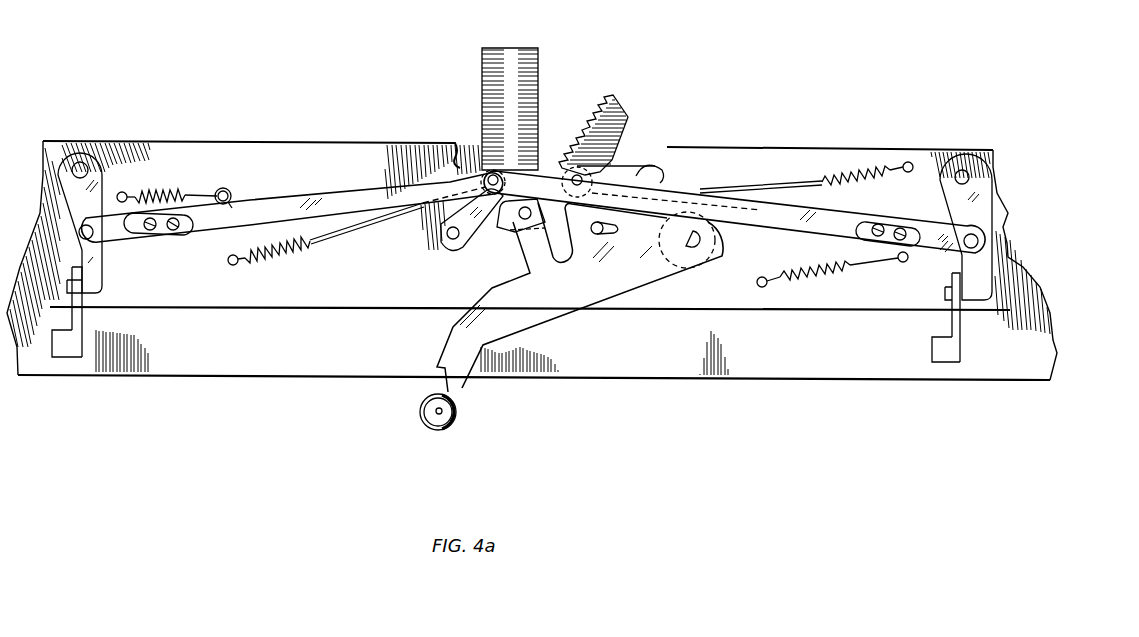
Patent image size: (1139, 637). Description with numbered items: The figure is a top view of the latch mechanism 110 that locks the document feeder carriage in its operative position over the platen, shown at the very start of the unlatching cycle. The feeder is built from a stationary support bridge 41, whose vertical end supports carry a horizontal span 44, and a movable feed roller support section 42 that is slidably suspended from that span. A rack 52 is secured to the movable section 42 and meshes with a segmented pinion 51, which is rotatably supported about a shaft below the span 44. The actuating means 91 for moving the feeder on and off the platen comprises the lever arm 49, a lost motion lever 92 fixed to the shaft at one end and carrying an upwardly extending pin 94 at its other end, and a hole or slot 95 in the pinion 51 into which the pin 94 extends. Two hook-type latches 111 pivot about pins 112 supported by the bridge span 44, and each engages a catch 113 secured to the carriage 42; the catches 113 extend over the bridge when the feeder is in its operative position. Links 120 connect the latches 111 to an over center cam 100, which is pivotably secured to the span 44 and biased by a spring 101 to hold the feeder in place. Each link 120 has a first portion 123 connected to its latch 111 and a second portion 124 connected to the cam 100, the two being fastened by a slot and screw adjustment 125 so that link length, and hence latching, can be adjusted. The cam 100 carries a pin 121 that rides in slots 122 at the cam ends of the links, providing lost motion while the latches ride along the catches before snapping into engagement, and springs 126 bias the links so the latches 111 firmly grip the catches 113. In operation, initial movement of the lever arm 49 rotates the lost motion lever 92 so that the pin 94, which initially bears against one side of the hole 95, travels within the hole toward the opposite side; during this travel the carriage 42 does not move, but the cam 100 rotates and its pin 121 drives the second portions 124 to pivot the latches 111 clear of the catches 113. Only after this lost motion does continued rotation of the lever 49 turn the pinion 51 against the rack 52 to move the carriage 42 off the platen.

The stationary support bridge 41 is at (1003, 222).
The movable feed roller support section 42 is at (1040, 368).
The horizontal span 44 is at (188, 140).
The lever arm 49 is at (458, 410).
The segmented pinion 51 is at (615, 103).
The rack 52 is at (525, 50).
The actuating means 91 is at (566, 338).
The lost motion lever 92 is at (662, 168).
The pin 94 is at (600, 172).
The hole or slot 95 is at (572, 172).
The over center cam 100 is at (450, 248).
The spring 101 is at (345, 240).
The latch mechanism 110 is at (163, 293).
The hook-type latch 111 is at (100, 290).
The pin 112 is at (84, 165).
The catch 113 is at (62, 350).
The link 120 is at (532, 208).
The pin 121 is at (500, 187).
The slot 122 is at (488, 176).
The first portion 123 is at (115, 230).
The second portion 124 is at (328, 176).
The slot and screw adjustment 125 is at (176, 232).
The spring 126 is at (178, 188).